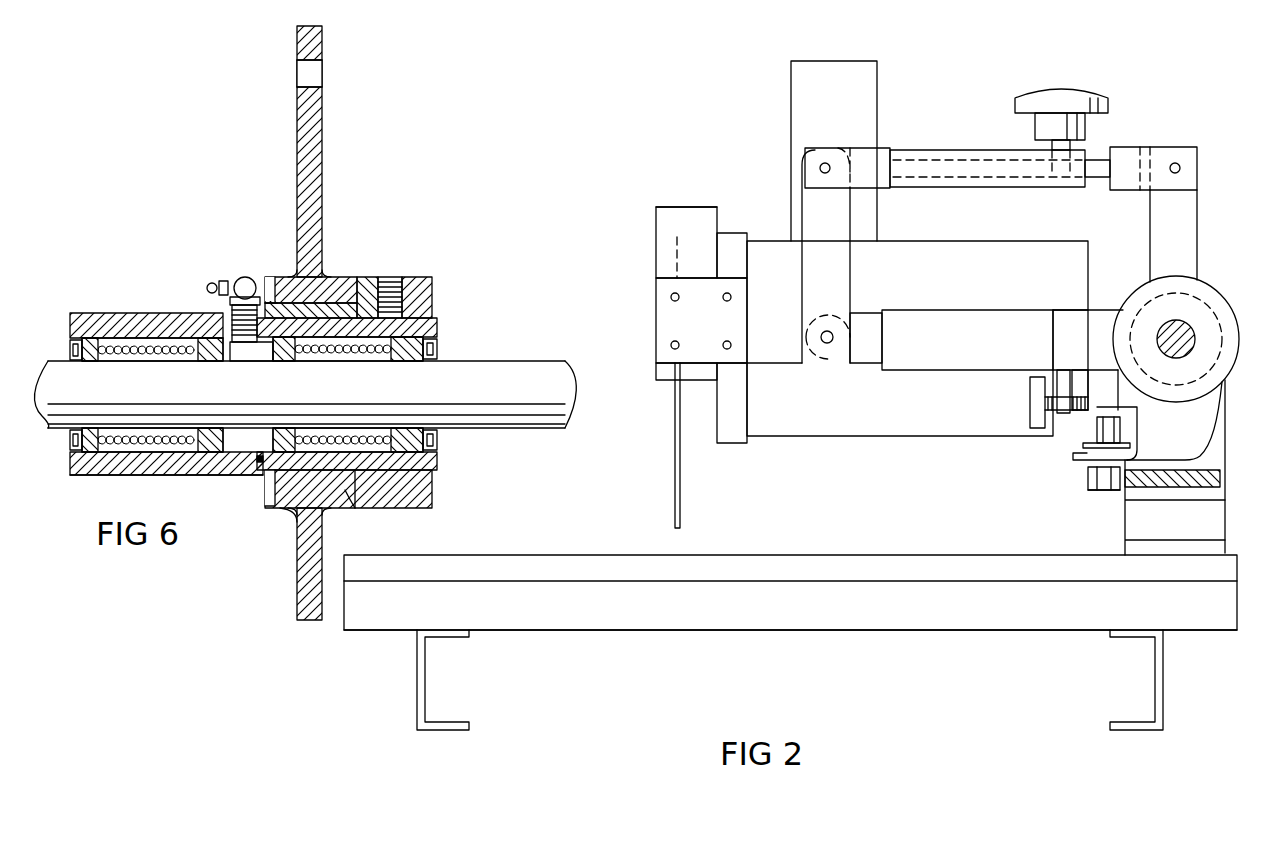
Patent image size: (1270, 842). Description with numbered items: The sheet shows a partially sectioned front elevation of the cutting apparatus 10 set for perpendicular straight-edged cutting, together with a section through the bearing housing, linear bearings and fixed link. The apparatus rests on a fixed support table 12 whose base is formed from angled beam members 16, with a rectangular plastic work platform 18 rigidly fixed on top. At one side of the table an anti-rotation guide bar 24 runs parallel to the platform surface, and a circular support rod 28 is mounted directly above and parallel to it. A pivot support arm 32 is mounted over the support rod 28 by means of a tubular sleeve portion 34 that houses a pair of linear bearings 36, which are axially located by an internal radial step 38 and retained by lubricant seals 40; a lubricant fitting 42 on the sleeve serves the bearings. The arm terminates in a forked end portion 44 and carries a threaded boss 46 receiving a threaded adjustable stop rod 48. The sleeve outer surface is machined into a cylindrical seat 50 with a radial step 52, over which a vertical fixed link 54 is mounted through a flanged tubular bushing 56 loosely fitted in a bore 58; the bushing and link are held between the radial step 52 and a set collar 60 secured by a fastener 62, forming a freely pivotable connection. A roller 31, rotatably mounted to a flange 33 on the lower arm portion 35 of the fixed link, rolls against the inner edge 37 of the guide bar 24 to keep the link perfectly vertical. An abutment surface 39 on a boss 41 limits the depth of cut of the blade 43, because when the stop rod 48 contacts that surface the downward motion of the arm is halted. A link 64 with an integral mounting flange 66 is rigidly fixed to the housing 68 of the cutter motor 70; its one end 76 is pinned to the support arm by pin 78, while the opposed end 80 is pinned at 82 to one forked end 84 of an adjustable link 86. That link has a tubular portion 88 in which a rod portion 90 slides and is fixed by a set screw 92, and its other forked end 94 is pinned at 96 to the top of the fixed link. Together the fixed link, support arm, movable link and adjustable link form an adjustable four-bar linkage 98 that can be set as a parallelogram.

In FIG. 2, the cutting apparatus 10 is at (688, 140).
In FIG. 2, the fixed support table 12 is at (800, 652).
In FIG. 2, the angled beam members 16 is at (417, 676).
In FIG. 2, the work platform 18 is at (570, 560).
In FIG. 2, the anti-rotation guide bar 24 is at (1150, 482).
In FIG. 6, the circular support rod 28 is at (540, 362).
In FIG. 2, the circular support rod 28 is at (1170, 343).
In FIG. 2, the roller 31 is at (1090, 482).
In FIG. 6, the pivot support arm 32 is at (190, 472).
In FIG. 2, the pivot support arm 32 is at (950, 310).
In FIG. 2, the flange 33 is at (1073, 458).
In FIG. 6, the tubular sleeve portion 34 is at (108, 318).
In FIG. 2, the tubular sleeve portion 34 is at (1210, 305).
In FIG. 2, the lower arm portion 35 is at (1195, 442).
In FIG. 6, the linear bearings 36 is at (100, 465).
In FIG. 2, the linear bearings 36 is at (1130, 300).
In FIG. 2, the inner edge 37 is at (1105, 490).
In FIG. 6, the internal radial step 38 is at (222, 300).
In FIG. 2, the abutment surface 39 is at (1086, 380).
In FIG. 6, the lubricant seals 40 is at (437, 348).
In FIG. 2, the boss 41 is at (1102, 395).
In FIG. 6, the lubricant fitting 42 is at (240, 278).
In FIG. 2, the blade 43 is at (675, 470).
In FIG. 2, the forked end portion 44 is at (866, 318).
In FIG. 2, the threaded boss 46 is at (1060, 412).
In FIG. 2, the threaded adjustable stop rod 48 is at (1030, 400).
In FIG. 6, the cylindrical seat 50 is at (437, 320).
In FIG. 6, the radial step 52 is at (270, 490).
In FIG. 6, the vertical fixed link 54 is at (322, 170).
In FIG. 2, the vertical fixed link 54 is at (1150, 225).
In FIG. 6, the flanged tubular bushing 56 is at (290, 510).
In FIG. 6, the bore 58 is at (353, 492).
In FIG. 6, the set collar 60 is at (418, 283).
In FIG. 6, the fastener 62 is at (390, 283).
In FIG. 2, the link 64 is at (803, 210).
In FIG. 2, the integral mounting flange 66 is at (765, 362).
In FIG. 2, the housing 68 is at (668, 212).
In FIG. 2, the cutter motor 70 is at (870, 440).
In FIG. 2, the one end 76 is at (805, 360).
In FIG. 2, the pin 78 is at (828, 345).
In FIG. 2, the opposed end 80 is at (803, 172).
In FIG. 2, the pivot pin 82 is at (820, 165).
In FIG. 2, the forked end 84 is at (880, 153).
In FIG. 2, the adjustable link 86 is at (988, 135).
In FIG. 2, the tubular portion 88 is at (1005, 190).
In FIG. 2, the rod portion 90 is at (1060, 187).
In FIG. 2, the set screw 92 is at (1100, 98).
In FIG. 2, the other forked end 94 is at (1133, 148).
In FIG. 2, the pivot pin 96 is at (1182, 168).
In FIG. 2, the adjustable four-bar linkage 98 is at (935, 385).